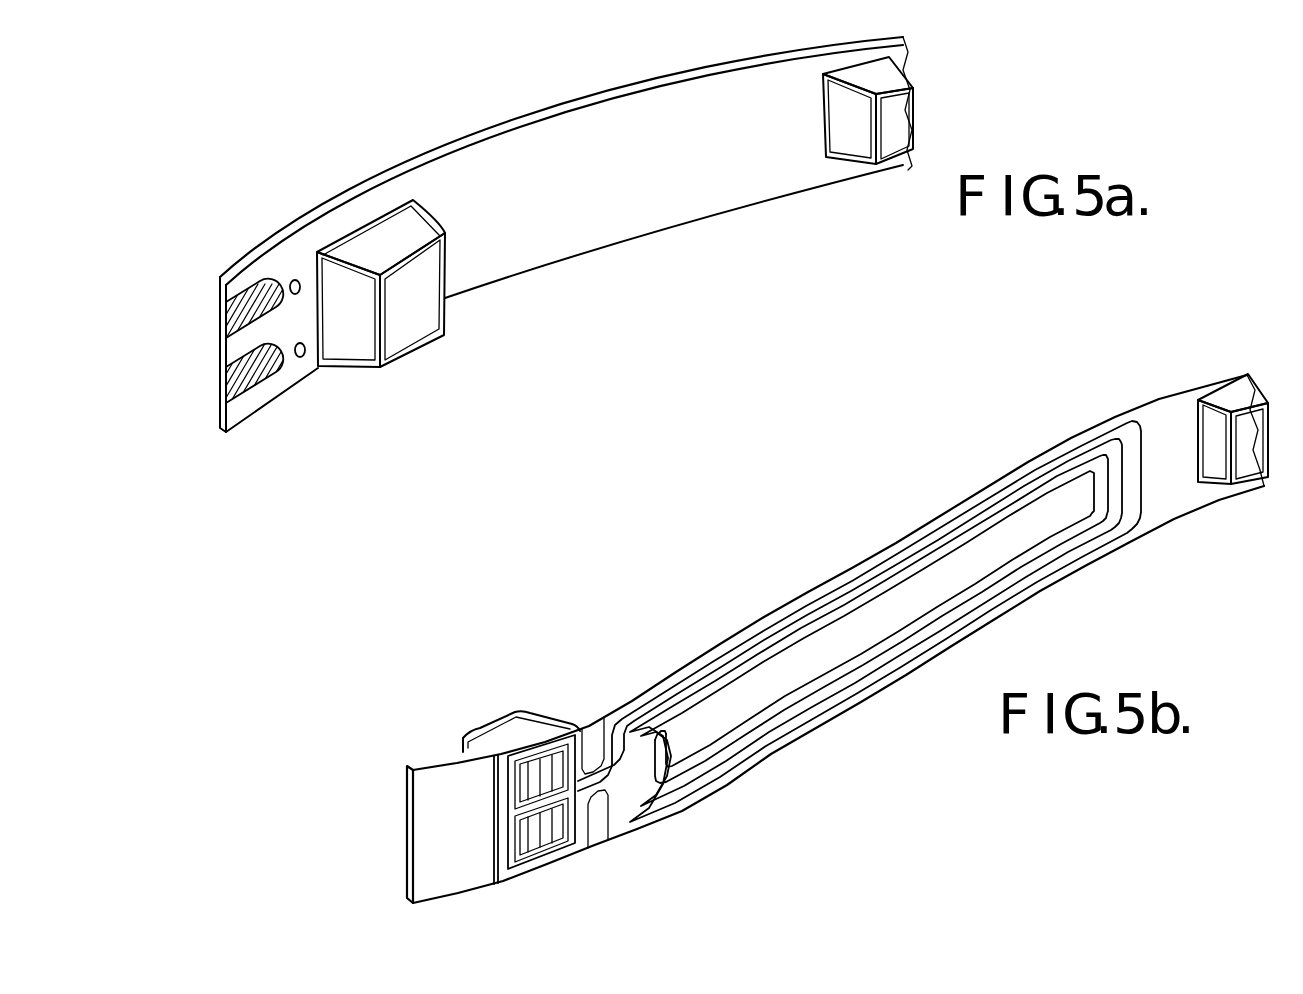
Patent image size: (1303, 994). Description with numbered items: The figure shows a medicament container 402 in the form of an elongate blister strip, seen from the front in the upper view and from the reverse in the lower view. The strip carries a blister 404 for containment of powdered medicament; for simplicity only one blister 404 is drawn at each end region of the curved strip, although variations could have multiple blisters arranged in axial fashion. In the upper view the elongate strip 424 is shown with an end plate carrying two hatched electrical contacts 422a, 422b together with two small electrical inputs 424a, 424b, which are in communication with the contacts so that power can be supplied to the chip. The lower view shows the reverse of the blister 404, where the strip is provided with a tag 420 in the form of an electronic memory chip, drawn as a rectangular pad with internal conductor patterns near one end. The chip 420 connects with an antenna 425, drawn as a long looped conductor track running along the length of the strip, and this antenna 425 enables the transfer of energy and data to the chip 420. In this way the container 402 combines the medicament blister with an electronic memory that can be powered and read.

In FIG. 5b, the medicament container 402 is at (880, 556).
In FIG. 5a, the blister 404 is at (411, 328).
In FIG. 5b, the blister 404 is at (500, 720).
In FIG. 5b, the tag 420 is at (557, 810).
In FIG. 5a, the strap 424 is at (635, 200).
In FIG. 5a, the electrical input 424a is at (290, 283).
In FIG. 5a, the electrical input 424b is at (300, 343).
In FIG. 5a, the electrical contact 422a is at (242, 315).
In FIG. 5a, the electrical contact 422b is at (235, 400).
In FIG. 5b, the antenna 425 is at (740, 740).